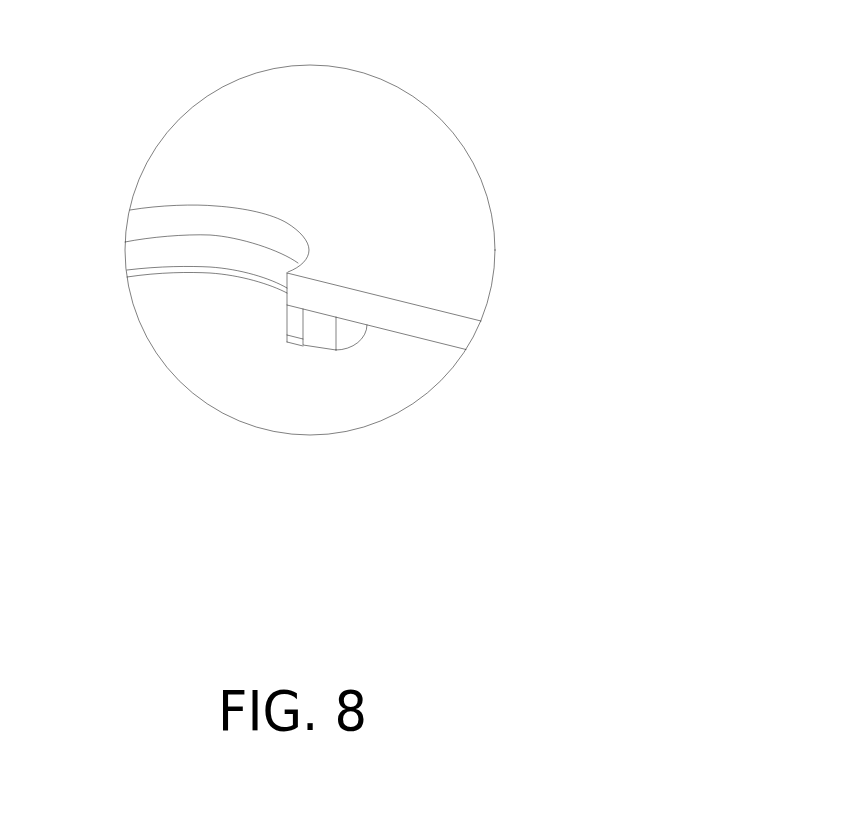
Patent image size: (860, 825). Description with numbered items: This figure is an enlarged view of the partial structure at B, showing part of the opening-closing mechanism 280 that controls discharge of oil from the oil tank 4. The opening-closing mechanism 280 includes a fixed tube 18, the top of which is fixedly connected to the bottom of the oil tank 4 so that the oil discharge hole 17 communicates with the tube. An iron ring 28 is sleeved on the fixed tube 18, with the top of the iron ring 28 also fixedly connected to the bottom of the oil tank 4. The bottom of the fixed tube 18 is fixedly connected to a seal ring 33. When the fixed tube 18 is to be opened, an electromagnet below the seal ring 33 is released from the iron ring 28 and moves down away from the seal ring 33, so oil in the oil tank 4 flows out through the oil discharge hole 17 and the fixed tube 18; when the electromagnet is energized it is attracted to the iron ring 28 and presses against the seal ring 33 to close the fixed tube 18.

The oil tank 4 is at (392, 143).
The oil discharge hole 17 is at (216, 206).
The fixed tube 18 is at (193, 248).
The iron ring 28 is at (322, 340).
The seal ring 33 is at (298, 342).
The opening-closing mechanism 280 is at (317, 418).
The enlarged partial structure at B is at (447, 373).